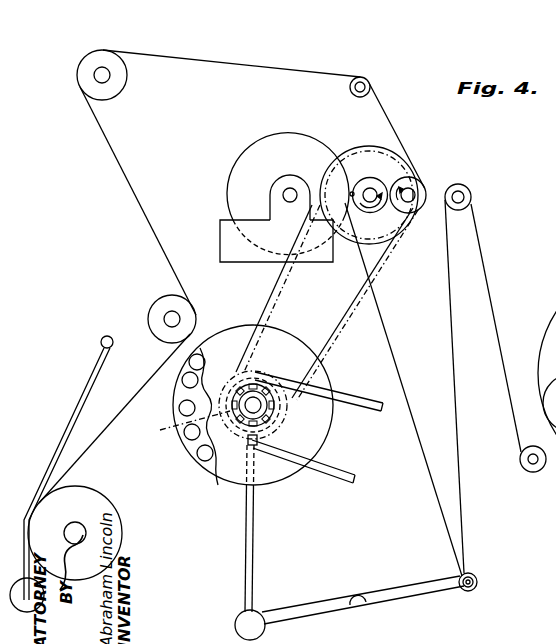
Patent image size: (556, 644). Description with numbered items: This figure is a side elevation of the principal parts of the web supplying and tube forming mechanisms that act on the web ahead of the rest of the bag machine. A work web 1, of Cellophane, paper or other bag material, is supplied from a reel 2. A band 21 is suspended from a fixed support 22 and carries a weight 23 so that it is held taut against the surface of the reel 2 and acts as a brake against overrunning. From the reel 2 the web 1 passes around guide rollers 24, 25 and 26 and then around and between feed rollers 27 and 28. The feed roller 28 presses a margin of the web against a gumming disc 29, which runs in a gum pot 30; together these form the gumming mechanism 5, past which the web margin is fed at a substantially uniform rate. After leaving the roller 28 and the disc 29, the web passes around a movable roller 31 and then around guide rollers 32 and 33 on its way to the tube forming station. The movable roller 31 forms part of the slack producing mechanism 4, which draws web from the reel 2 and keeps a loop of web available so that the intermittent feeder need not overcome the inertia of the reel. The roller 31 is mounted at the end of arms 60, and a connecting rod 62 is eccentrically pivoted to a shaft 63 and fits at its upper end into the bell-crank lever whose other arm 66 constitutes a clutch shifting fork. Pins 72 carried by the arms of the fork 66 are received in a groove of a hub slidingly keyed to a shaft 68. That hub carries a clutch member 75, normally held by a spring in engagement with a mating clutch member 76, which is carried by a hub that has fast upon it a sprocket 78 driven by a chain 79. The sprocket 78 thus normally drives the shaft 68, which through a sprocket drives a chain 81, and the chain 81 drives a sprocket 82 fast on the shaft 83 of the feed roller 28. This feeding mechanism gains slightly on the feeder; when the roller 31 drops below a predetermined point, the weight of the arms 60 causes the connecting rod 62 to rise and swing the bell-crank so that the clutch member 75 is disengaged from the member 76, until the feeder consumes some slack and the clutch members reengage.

The work web 1 is at (107, 432).
The reel 2 is at (112, 538).
The slack producing mechanism 4 is at (208, 479).
The gumming mechanism 5 is at (252, 143).
The band 21 is at (85, 388).
The fixed support 22 is at (105, 336).
The weight 23 is at (40, 587).
The guide roller 24 is at (159, 299).
The guide roller 25 is at (115, 90).
The guide roller 26 is at (350, 90).
The feed roller 27 is at (412, 217).
The feed roller 28 is at (373, 180).
The gumming disc 29 is at (228, 182).
The gum pot 30 is at (221, 240).
The movable roller 31 is at (476, 592).
The guide roller 32 is at (455, 183).
The guide roller 33 is at (533, 473).
The arms 60 is at (381, 600).
The connecting rod 62 is at (255, 551).
The shaft 63 is at (235, 627).
The arm of bell-crank lever 66 is at (181, 428).
The shaft 68 is at (257, 395).
The pins 72 is at (240, 391).
The clutch member 75 is at (194, 457).
The clutch member 76 is at (277, 475).
The sprocket 78 is at (281, 428).
The chain 79 is at (355, 403).
The chain 81 is at (278, 288).
The sprocket 82 is at (365, 157).
The shaft 83 is at (351, 193).